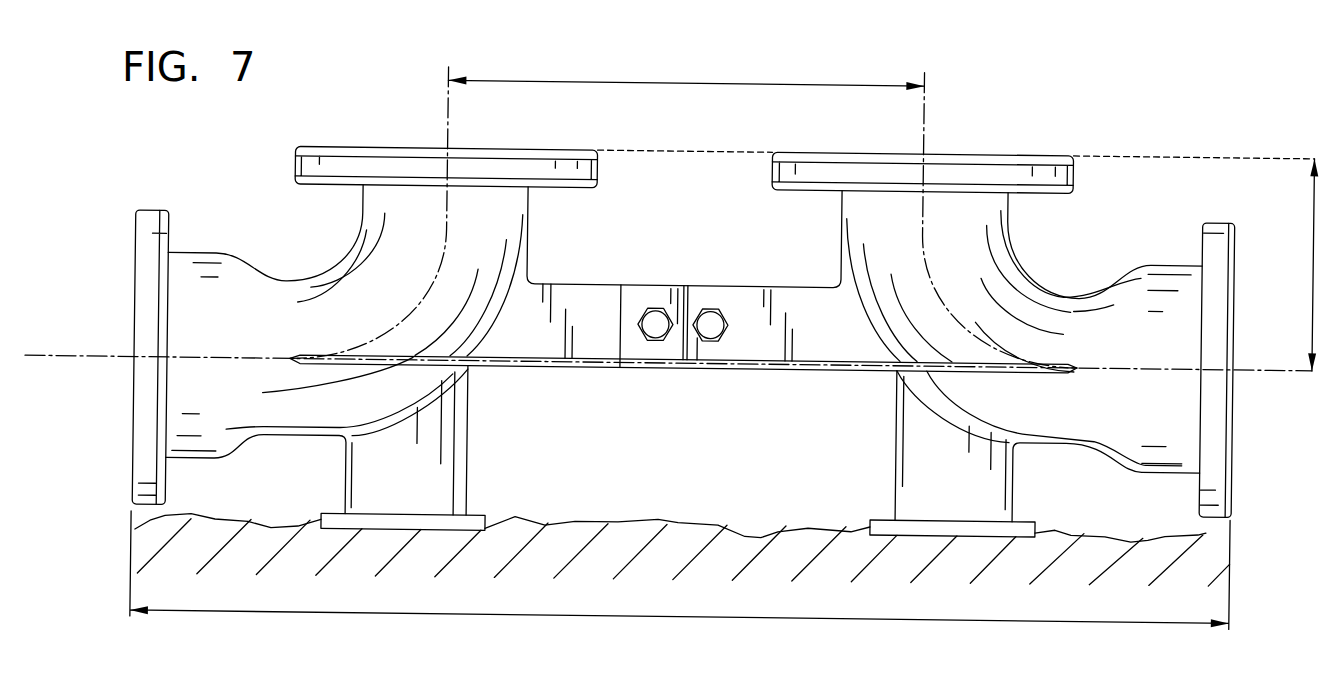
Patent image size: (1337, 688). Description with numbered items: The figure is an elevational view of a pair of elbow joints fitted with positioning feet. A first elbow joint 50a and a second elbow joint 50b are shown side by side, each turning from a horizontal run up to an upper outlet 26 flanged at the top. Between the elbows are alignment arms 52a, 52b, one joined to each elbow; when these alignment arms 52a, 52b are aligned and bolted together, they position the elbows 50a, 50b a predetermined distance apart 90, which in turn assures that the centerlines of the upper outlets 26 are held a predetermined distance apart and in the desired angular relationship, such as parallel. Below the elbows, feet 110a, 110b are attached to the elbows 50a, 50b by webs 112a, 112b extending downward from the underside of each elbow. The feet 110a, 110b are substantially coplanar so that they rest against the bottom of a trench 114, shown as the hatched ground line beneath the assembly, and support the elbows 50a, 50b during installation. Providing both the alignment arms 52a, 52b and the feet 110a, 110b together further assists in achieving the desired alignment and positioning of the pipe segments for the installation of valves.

The upper outlets 26 is at (680, 76).
The first elbow joint 50a is at (233, 287).
The second elbow joint 50b is at (1135, 274).
The alignment arm 52a is at (578, 292).
The alignment arm 52b is at (706, 287).
The predetermined distance apart 90 is at (592, 611).
The foot 110a is at (488, 510).
The foot 110b is at (1025, 516).
The web 112a is at (454, 412).
The web 112b is at (908, 448).
The trench 114 is at (687, 517).